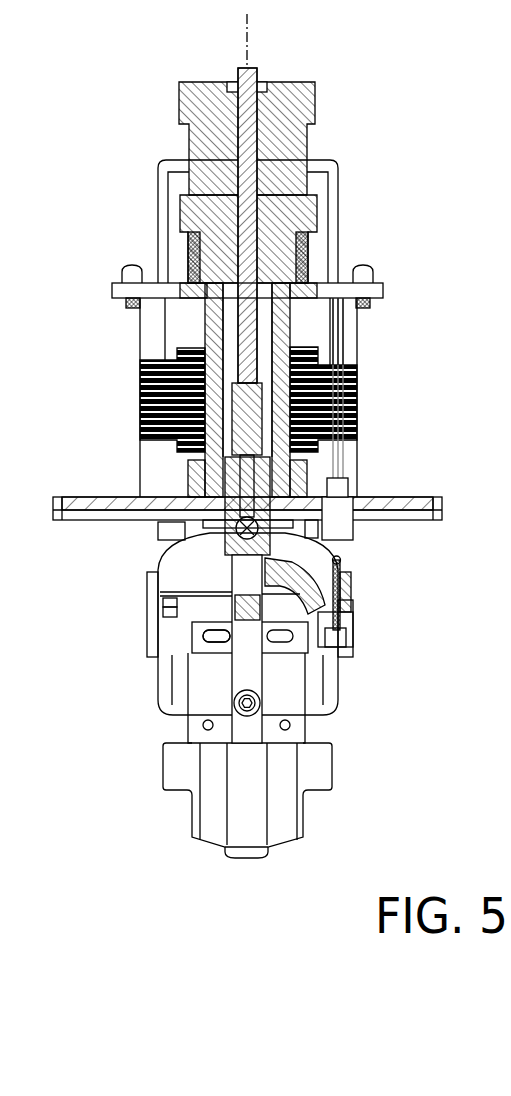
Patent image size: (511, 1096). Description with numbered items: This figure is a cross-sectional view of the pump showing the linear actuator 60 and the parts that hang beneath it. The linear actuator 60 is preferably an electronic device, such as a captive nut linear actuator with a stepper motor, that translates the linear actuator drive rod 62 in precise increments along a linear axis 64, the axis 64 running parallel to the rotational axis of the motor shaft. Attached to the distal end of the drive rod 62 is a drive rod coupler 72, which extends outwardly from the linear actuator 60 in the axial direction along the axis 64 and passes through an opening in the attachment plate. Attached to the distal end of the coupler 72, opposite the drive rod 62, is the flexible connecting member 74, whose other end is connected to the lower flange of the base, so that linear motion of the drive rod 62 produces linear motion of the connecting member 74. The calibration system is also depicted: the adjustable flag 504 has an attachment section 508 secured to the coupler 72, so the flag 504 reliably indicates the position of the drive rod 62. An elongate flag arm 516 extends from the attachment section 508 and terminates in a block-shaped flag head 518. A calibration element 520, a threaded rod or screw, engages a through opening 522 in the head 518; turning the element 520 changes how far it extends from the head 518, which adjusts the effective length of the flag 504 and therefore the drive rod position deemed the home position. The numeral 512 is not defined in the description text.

The linear axis 64 is at (248, 27).
The linear actuator 60 is at (316, 100).
The linear actuator drive rod 62 is at (214, 380).
The drive rod coupler 72 is at (192, 492).
The attachment section 508 is at (184, 552).
The right support block 512 is at (272, 538).
The adjustable flag 504 is at (312, 563).
The connecting member 74 is at (238, 577).
The calibration element 520 is at (345, 578).
The flag head 518 is at (355, 603).
The flag arm 516 is at (295, 588).
The through opening 522 is at (342, 650).